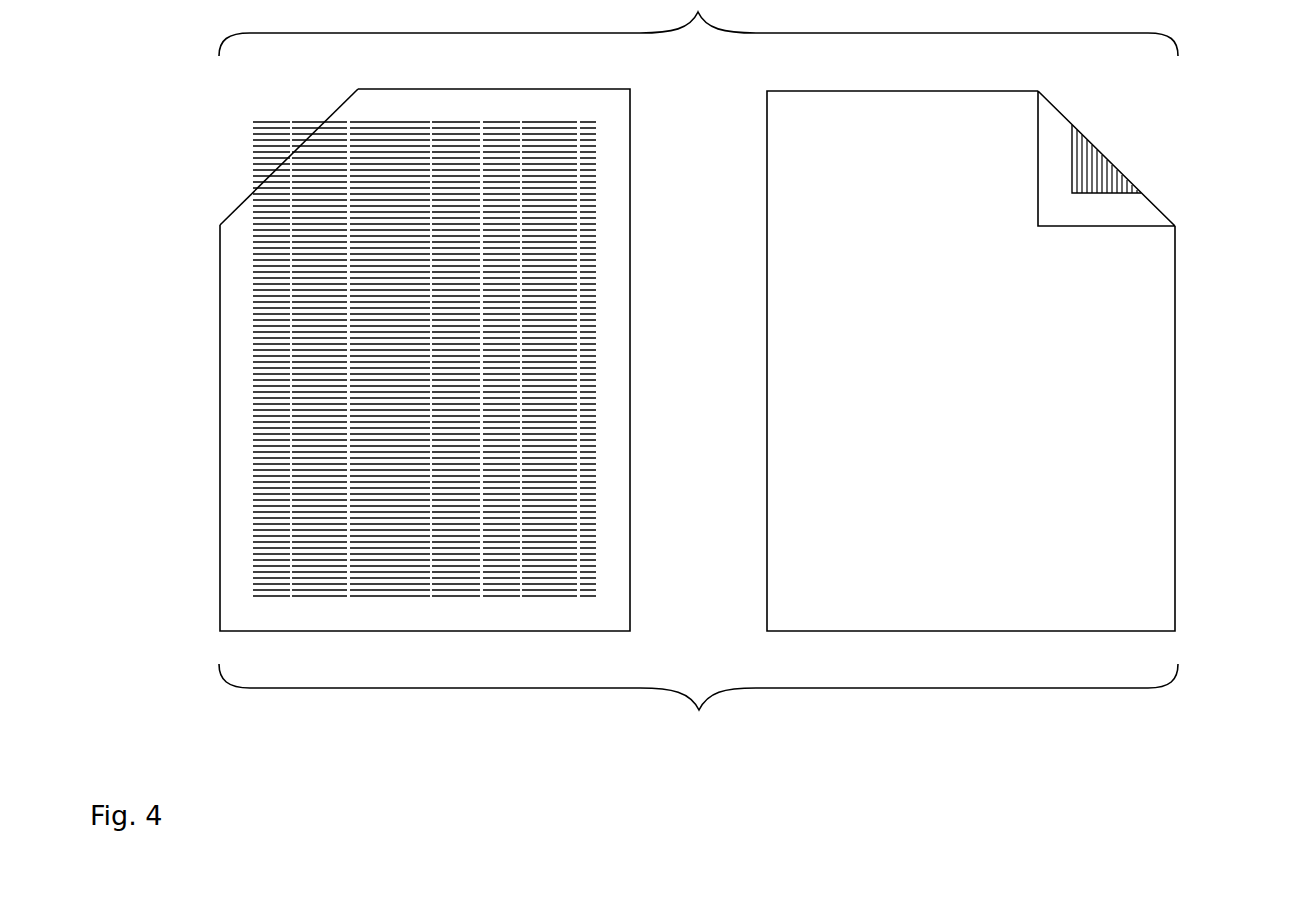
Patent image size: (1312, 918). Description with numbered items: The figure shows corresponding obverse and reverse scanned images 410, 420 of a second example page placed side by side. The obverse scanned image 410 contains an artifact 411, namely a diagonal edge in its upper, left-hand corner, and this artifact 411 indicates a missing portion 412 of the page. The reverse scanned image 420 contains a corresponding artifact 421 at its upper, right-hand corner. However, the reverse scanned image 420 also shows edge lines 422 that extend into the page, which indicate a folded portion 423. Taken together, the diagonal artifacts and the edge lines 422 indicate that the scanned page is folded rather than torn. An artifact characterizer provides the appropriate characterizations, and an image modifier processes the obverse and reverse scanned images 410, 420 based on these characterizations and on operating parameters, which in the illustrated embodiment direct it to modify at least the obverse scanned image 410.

The obverse scanned image 410 is at (630, 292).
The artifact 411 is at (324, 122).
The missing portion 412 is at (197, 89).
The reverse scanned image 420 is at (1175, 293).
The artifact 421 is at (1072, 123).
The edge lines 422 is at (1058, 103).
The folded portion 423 is at (1095, 158).